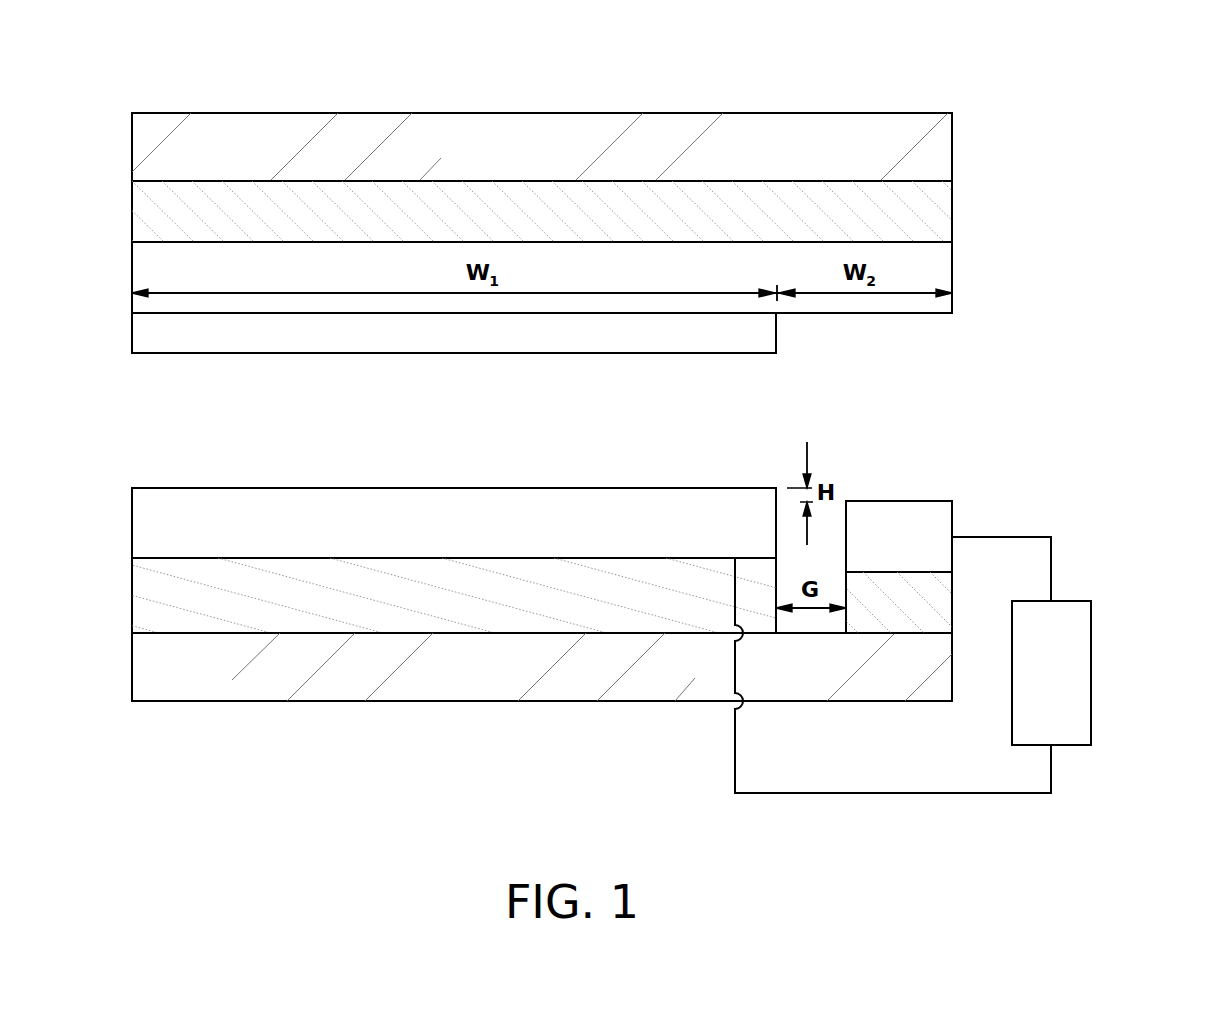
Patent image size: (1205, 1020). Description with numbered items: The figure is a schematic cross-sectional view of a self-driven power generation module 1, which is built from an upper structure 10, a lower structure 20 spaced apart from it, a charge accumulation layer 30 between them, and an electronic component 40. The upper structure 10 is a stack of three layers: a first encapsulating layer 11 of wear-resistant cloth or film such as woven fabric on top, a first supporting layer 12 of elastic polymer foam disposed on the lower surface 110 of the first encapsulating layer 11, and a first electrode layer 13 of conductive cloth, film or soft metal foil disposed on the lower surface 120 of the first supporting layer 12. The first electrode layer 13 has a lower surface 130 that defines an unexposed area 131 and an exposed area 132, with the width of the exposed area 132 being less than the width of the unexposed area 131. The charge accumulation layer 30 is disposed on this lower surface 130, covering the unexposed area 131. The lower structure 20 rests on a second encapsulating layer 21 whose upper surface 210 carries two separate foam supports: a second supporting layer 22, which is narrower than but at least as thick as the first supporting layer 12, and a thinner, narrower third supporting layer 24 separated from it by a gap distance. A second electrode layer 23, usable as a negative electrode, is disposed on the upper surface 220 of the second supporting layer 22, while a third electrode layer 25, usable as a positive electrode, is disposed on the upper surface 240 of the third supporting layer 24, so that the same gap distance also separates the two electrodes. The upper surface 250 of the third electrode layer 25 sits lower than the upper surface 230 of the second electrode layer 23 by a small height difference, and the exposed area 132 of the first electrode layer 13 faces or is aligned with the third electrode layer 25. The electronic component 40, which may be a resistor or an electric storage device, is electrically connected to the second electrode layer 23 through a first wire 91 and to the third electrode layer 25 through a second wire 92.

The self-driven power generation module 1 is at (1127, 64).
The upper structure 10 is at (125, 113).
The first encapsulating layer 11 is at (937, 148).
The first supporting layer 12 is at (937, 208).
The first electrode layer 13 is at (937, 268).
The charge accumulation layer 30 is at (143, 336).
The lower surface of the first encapsulating layer 110 is at (817, 182).
The lower surface of the first supporting layer 120 is at (762, 242).
The lower surface of the first electrode layer 130 is at (705, 313).
The unexposed area 131 is at (468, 331).
The exposed area 132 is at (851, 331).
The lower structure 20 is at (125, 488).
The second encapsulating layer 21 is at (262, 668).
The second supporting layer 22 is at (338, 606).
The second electrode layer 23 is at (447, 535).
The upper surface of the second encapsulating layer 210 is at (217, 633).
The upper surface of the second supporting layer 220 is at (392, 558).
The upper surface of the second electrode layer 230 is at (611, 488).
The third supporting layer 24 is at (882, 612).
The third electrode layer 25 is at (877, 520).
The upper surface of the third supporting layer 240 is at (927, 572).
The upper surface of the third electrode layer 250 is at (925, 500).
The electronic component 40 is at (1078, 660).
The first wire 91 is at (964, 795).
The second wire 92 is at (1051, 560).